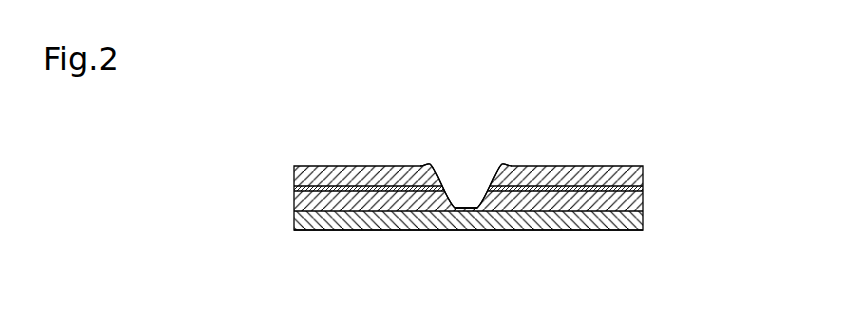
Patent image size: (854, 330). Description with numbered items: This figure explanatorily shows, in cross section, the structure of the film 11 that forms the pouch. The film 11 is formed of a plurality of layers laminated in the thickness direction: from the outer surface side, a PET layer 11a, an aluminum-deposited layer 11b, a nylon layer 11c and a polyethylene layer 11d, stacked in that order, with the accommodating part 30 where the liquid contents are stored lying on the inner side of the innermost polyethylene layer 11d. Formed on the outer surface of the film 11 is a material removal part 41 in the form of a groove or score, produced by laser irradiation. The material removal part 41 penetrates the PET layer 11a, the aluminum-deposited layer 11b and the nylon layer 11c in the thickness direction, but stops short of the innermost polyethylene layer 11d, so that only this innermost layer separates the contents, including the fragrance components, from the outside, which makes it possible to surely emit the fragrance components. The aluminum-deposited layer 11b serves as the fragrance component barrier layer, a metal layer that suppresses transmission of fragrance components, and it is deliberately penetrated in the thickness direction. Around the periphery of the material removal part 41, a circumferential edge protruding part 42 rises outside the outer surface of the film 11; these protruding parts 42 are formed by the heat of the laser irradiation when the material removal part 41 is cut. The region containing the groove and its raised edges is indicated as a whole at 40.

The film 11 is at (310, 148).
The PET layer 11a is at (640, 173).
The aluminum-deposited layer 11b is at (640, 187).
The nylon layer 11c is at (640, 200).
The polyethylene layer 11d is at (640, 220).
The accommodating part 30 is at (458, 285).
The recess 40 is at (435, 113).
The material removal part 41 is at (484, 162).
The circumferential edge protruding part 42 is at (428, 165).